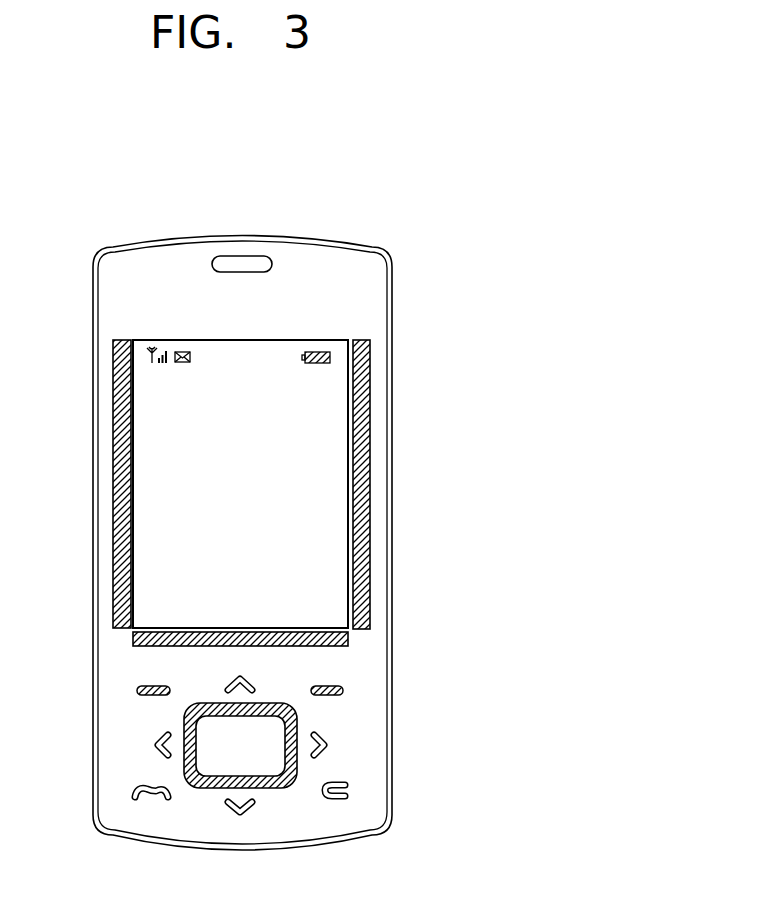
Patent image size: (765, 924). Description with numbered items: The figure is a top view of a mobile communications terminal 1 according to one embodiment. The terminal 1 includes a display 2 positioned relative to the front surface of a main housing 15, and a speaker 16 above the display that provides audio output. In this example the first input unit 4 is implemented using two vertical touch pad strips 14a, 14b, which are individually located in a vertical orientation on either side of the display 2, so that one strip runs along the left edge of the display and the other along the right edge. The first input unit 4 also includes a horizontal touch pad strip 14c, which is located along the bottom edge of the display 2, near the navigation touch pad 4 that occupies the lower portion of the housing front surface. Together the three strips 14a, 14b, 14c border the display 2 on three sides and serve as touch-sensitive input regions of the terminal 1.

The terminal 1 is at (420, 235).
The display 2 is at (333, 575).
The first input unit 4 is at (348, 741).
The vertical touch pad strip 14a is at (121, 483).
The vertical touch pad strip 14b is at (365, 485).
The horizontal touch pad strip 14c is at (137, 640).
The main housing 15 is at (392, 370).
The speaker 16 is at (241, 262).